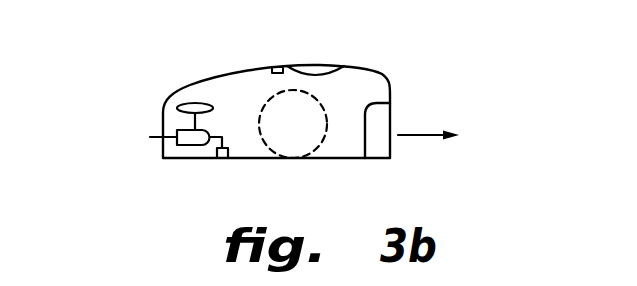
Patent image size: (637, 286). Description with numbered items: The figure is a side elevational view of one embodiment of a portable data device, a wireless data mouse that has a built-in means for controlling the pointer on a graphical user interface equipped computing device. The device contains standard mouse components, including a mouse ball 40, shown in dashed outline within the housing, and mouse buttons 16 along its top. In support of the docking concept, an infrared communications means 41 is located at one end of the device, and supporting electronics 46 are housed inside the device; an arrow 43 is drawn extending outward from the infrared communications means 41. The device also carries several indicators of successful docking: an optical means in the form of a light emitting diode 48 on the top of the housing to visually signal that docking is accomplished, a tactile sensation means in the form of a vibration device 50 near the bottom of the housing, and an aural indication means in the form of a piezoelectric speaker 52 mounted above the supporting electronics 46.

The mouse buttons 16 is at (326, 66).
The mouse ball 40 is at (262, 112).
The infrared communications means 41 is at (387, 113).
The light output direction 43 is at (420, 137).
The supporting electronics 46 is at (150, 137).
The light emitting diode 48 is at (279, 66).
The vibration device 50 is at (222, 158).
The piezoelectric speaker 52 is at (190, 103).